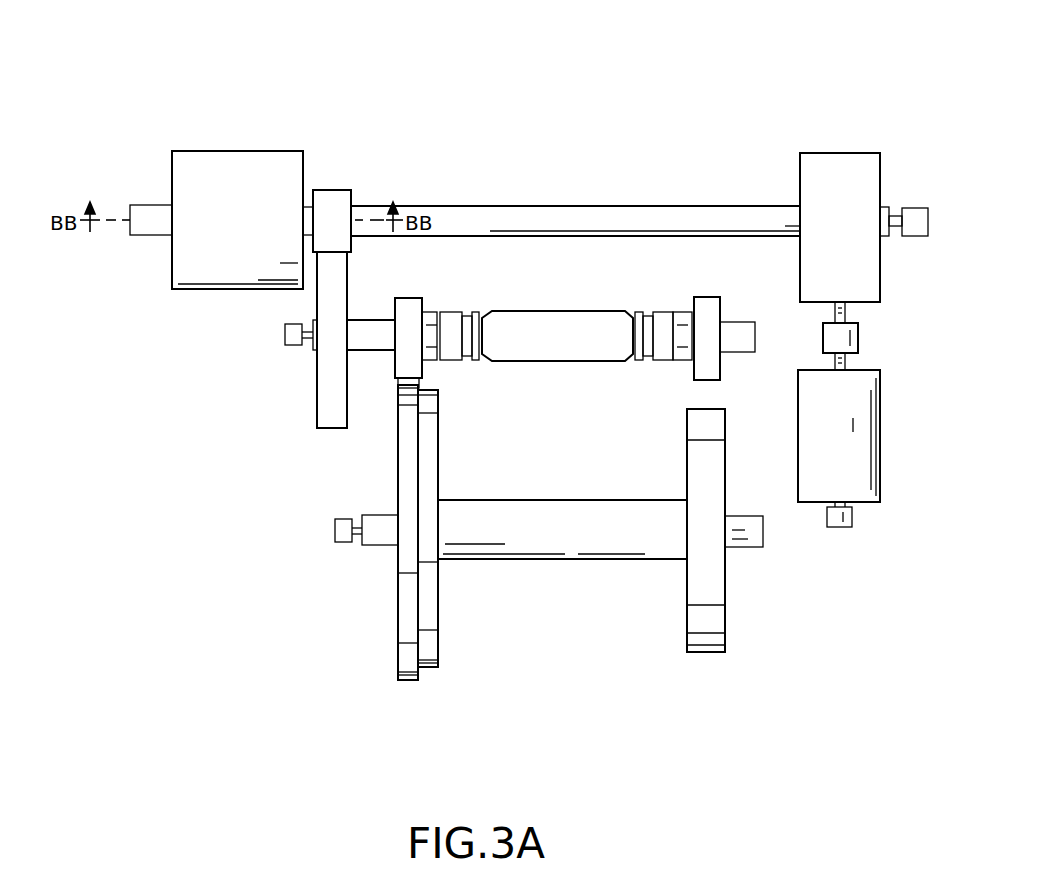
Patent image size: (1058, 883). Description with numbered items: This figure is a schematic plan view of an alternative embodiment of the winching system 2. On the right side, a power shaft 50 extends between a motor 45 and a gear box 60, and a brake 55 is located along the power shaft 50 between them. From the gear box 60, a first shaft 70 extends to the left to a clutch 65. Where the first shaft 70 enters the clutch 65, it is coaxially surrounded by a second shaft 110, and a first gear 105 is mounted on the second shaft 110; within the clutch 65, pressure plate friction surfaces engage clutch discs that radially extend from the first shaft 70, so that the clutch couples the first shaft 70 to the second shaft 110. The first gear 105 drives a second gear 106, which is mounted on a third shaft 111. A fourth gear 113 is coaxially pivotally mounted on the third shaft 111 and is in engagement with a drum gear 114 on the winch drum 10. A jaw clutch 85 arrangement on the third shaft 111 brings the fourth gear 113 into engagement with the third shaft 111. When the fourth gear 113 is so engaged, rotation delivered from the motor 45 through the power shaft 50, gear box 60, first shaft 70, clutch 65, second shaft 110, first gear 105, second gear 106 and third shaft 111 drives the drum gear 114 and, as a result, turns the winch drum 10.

The winching system 2 is at (663, 103).
The winch drum 10 is at (713, 652).
The motor 45 is at (880, 405).
The power shaft 50 is at (847, 312).
The brake 55 is at (858, 338).
The gear box 60 is at (868, 153).
The clutch 65 is at (233, 162).
The first shaft 70 is at (468, 216).
The jaw clutch 85 is at (463, 362).
The first gear 105 is at (340, 195).
The second gear 106 is at (317, 398).
The second shaft 110 is at (307, 205).
The third shaft 111 is at (363, 318).
The fourth gear 113 is at (410, 303).
The drum gear 114 is at (408, 680).